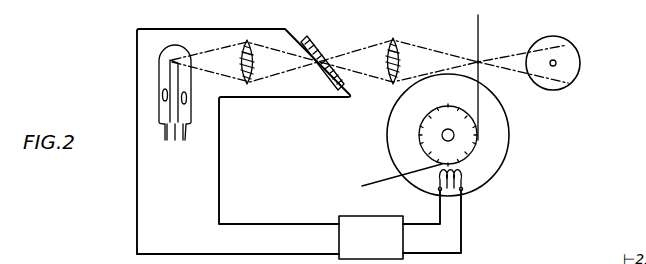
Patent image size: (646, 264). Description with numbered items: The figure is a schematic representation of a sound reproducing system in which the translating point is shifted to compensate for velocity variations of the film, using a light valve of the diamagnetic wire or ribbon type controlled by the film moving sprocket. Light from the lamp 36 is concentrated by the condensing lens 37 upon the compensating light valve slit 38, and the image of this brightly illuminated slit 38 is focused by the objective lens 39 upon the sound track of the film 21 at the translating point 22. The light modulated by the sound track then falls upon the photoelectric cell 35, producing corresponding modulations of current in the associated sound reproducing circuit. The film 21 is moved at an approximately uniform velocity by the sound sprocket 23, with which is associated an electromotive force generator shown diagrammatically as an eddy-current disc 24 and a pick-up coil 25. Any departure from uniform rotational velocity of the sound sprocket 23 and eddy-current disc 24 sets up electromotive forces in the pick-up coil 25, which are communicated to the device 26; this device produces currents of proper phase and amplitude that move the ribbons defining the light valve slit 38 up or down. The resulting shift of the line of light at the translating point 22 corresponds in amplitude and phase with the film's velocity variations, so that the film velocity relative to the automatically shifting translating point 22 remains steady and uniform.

The film 21 is at (484, 15).
The translating point 22 is at (477, 62).
The sound sprocket 23 is at (420, 134).
The eddy-current disc 24 is at (509, 134).
The pick-up coil 25 is at (465, 170).
The device 26 is at (383, 216).
The photoelectric cell 35 is at (580, 60).
The lamp 36 is at (185, 80).
The condensing lens 37 is at (254, 80).
The light valve slit 38 is at (320, 55).
The objective lens 39 is at (396, 44).